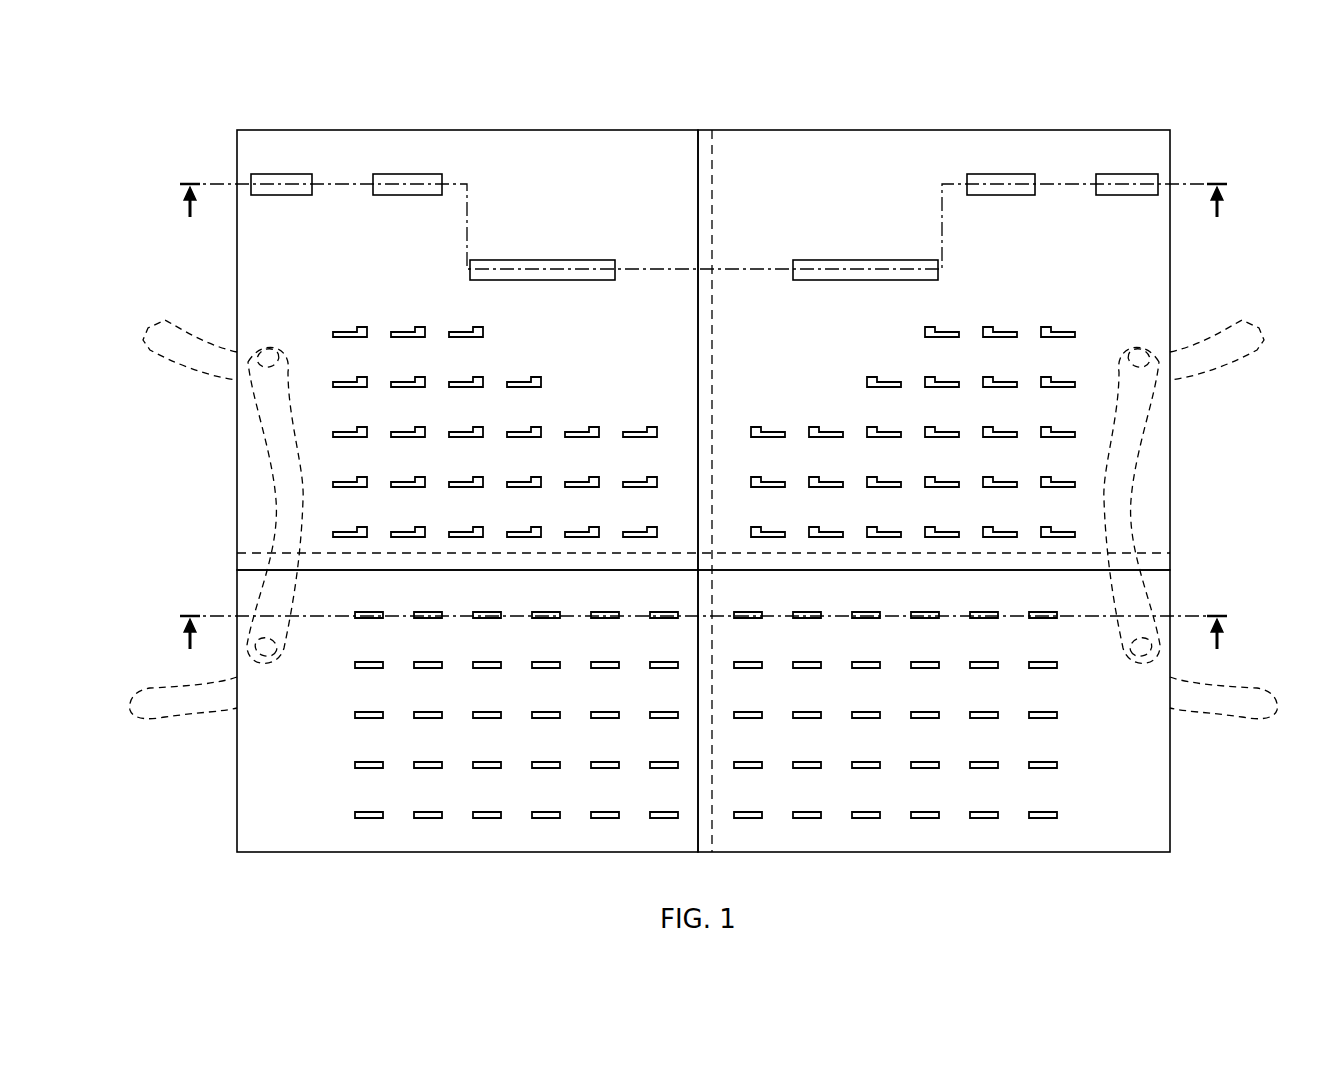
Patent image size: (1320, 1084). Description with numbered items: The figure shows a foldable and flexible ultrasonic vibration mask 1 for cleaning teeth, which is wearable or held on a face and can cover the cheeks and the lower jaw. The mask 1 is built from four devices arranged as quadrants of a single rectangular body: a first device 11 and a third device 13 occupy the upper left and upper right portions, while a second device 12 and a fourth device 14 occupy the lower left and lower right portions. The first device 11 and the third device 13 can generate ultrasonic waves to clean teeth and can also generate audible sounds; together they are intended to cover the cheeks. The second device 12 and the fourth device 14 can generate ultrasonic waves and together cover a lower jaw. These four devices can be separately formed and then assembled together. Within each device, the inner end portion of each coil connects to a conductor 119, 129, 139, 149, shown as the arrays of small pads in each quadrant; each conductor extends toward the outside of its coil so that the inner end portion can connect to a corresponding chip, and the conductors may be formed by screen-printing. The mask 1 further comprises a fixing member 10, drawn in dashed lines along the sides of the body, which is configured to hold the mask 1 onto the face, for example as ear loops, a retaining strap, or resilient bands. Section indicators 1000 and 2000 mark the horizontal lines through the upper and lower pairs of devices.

The mask 1 is at (155, 104).
The fixing member 10 is at (1120, 493).
The first device 11 is at (326, 144).
The second device 12 is at (251, 808).
The third device 13 is at (1081, 144).
The fourth device 14 is at (1157, 808).
The conductor 119 is at (333, 333).
The conductor 129 is at (355, 715).
The conductor 139 is at (1075, 333).
The conductor 149 is at (1057, 715).
The first section line 1000 is at (707, 227).
The second section line 2000 is at (707, 649).